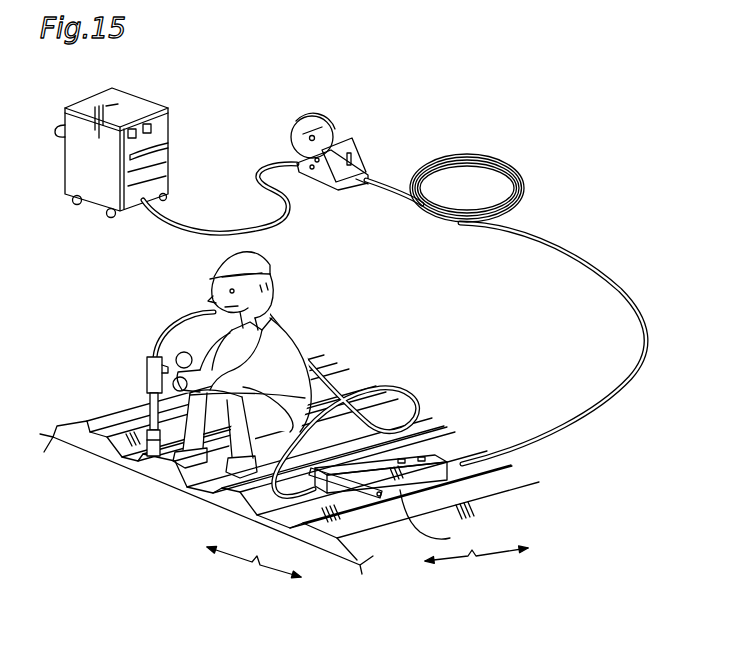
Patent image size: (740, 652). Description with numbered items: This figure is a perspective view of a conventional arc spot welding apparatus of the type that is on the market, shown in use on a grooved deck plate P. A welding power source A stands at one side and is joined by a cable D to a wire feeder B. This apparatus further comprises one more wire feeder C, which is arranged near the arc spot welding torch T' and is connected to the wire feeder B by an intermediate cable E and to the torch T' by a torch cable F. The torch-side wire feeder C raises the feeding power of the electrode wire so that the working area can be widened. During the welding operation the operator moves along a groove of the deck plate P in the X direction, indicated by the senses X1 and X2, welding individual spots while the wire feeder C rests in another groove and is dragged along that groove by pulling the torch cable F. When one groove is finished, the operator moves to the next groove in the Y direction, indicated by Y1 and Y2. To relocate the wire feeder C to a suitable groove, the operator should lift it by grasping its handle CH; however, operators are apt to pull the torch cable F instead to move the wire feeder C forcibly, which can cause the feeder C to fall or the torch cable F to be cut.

The welding power source A is at (155, 95).
The wire feeder B is at (352, 123).
The wire feeder C is at (432, 456).
The cable D is at (296, 216).
The intermediate cable E is at (600, 275).
The torch cable F is at (315, 345).
The arc spot welding torch T' is at (121, 406).
The deck plate P is at (231, 490).
The handle CH is at (450, 538).
The X direction X1 is at (476, 569).
The X direction X2 is at (532, 563).
The Y direction Y1 is at (246, 563).
The Y direction Y2 is at (299, 588).